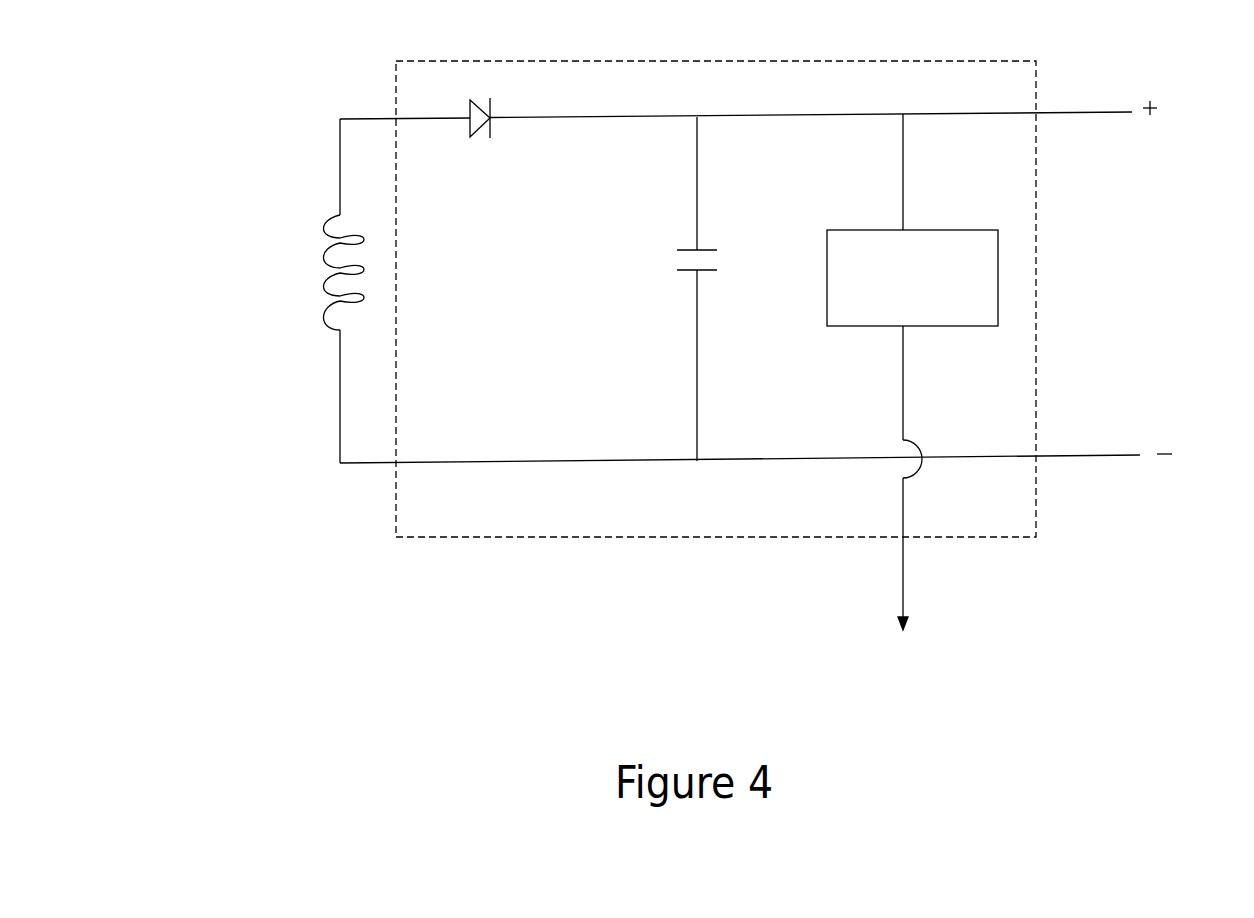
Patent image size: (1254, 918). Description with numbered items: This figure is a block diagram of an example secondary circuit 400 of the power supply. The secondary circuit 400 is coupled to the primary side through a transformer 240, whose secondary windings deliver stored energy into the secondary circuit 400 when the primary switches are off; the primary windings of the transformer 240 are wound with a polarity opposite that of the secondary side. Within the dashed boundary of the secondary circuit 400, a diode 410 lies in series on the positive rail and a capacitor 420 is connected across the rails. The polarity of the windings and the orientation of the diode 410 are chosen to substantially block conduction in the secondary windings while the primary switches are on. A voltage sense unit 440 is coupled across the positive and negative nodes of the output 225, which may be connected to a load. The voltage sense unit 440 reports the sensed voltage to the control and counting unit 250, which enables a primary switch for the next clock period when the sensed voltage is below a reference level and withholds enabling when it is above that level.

The secondary circuit 400 is at (716, 281).
The diode 410 is at (477, 135).
The capacitor 420 is at (672, 289).
The voltage sense unit 440 is at (912, 220).
The transformer 240 is at (276, 272).
The output 225 is at (1191, 277).
The control and counting unit 250 is at (909, 515).